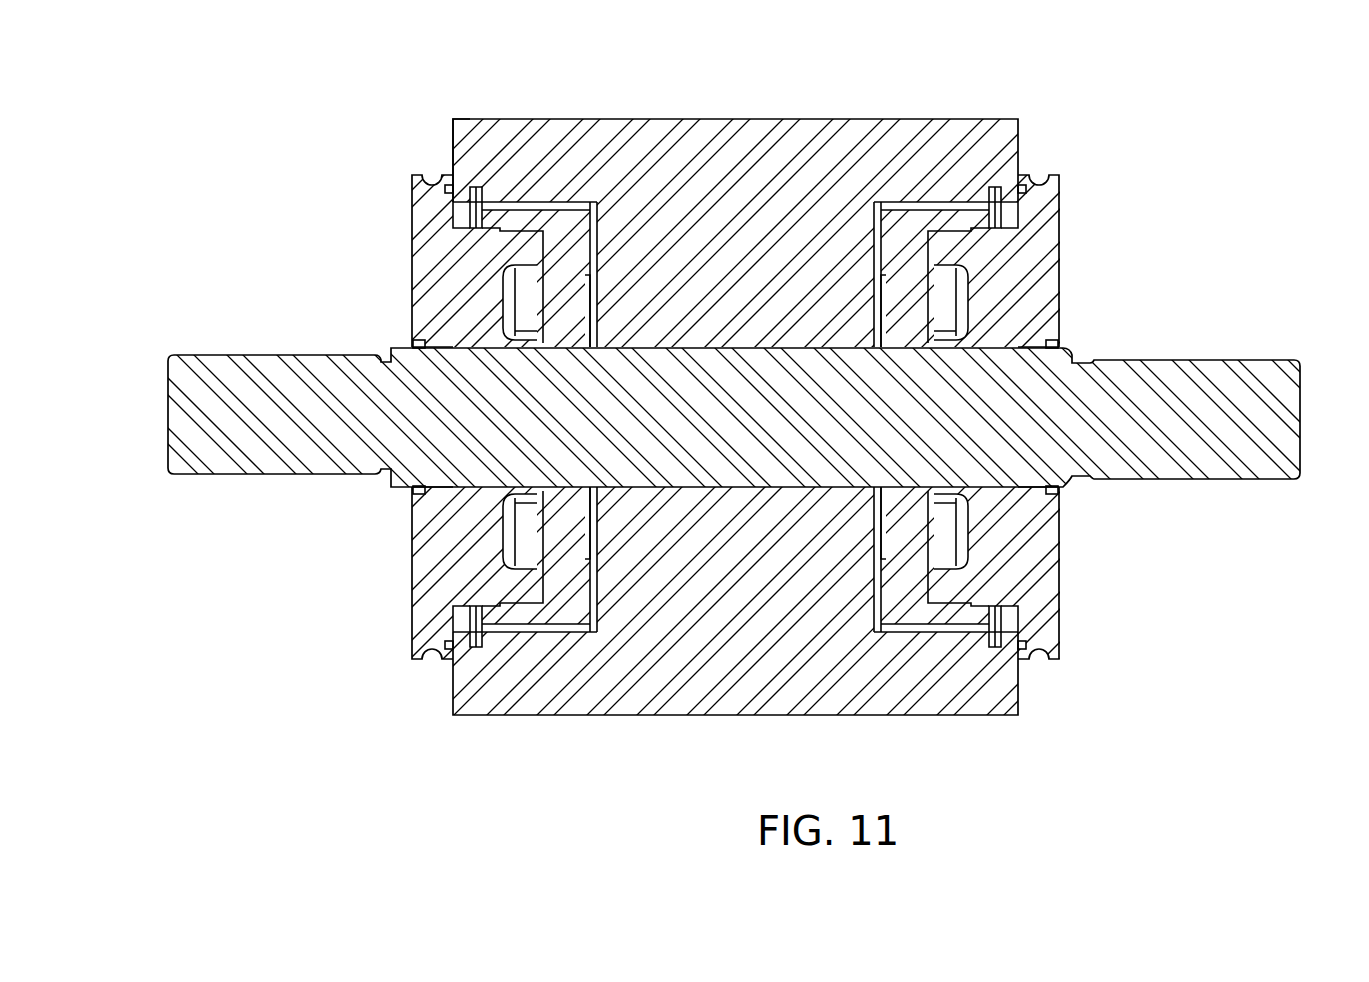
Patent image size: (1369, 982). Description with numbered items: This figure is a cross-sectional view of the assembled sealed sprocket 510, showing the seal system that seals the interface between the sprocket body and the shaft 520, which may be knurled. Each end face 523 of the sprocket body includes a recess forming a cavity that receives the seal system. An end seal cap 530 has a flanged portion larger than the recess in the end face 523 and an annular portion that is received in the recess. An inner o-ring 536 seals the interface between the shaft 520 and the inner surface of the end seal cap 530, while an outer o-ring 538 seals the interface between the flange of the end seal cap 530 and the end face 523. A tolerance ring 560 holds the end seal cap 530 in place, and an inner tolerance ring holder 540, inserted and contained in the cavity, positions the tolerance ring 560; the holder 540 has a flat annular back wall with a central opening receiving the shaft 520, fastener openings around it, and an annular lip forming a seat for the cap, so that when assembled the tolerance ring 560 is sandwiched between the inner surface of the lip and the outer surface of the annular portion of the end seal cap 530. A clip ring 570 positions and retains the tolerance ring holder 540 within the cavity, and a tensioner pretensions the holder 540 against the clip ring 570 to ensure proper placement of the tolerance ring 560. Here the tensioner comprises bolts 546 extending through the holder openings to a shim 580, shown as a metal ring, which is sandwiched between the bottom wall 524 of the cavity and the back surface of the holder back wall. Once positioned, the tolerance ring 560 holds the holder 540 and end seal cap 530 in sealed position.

The sealed sprocket 510 is at (1043, 118).
The shaft 520 is at (207, 367).
The end face 523 is at (453, 119).
The bottom wall of the cavity 524 is at (577, 203).
The end seal cap 530 is at (407, 250).
The inner o-ring 536 is at (418, 343).
The outer o-ring 538 is at (447, 184).
The inner tolerance ring holder 540 is at (555, 207).
The bolts 546 is at (526, 327).
The tolerance ring 560 is at (510, 207).
The clip ring 570 is at (467, 187).
The shim 580 is at (592, 532).